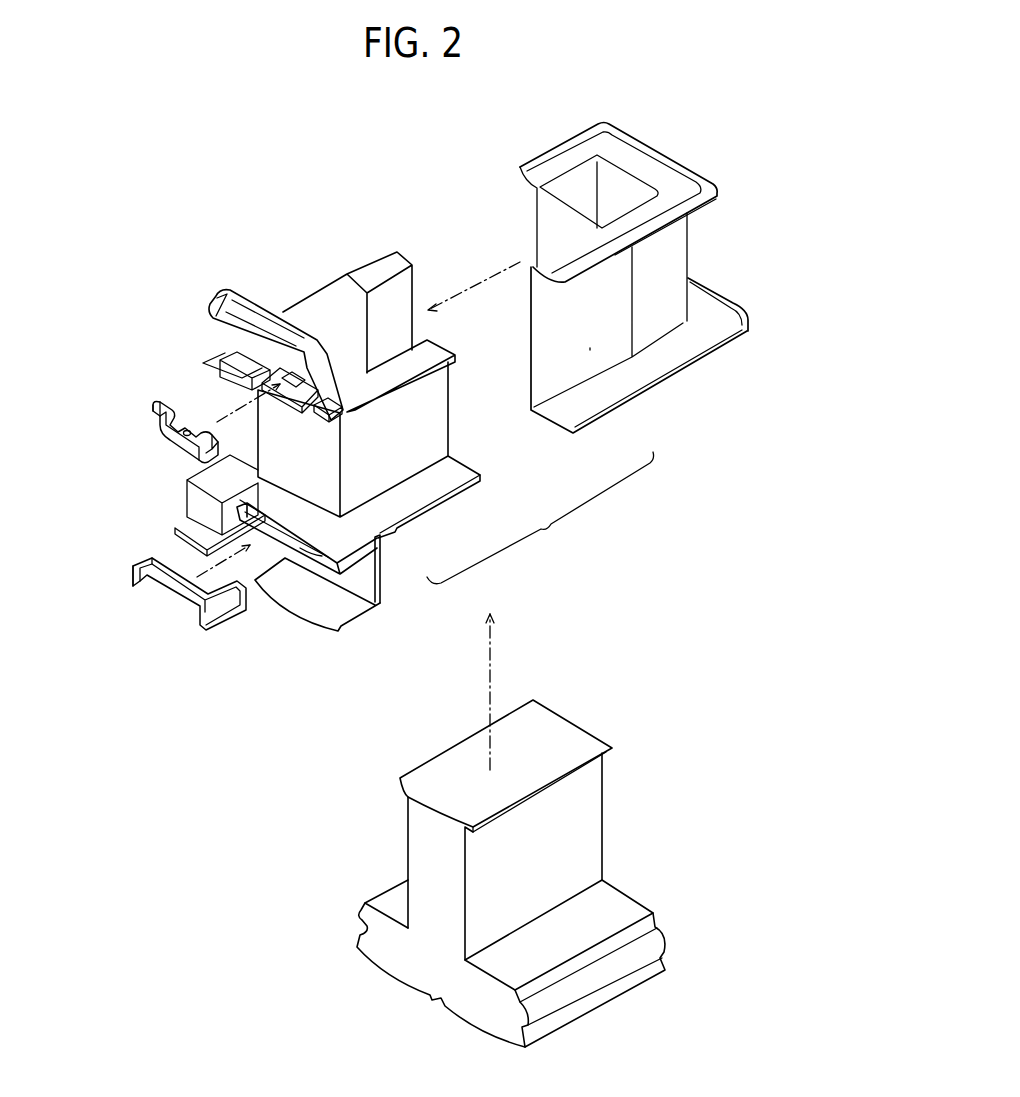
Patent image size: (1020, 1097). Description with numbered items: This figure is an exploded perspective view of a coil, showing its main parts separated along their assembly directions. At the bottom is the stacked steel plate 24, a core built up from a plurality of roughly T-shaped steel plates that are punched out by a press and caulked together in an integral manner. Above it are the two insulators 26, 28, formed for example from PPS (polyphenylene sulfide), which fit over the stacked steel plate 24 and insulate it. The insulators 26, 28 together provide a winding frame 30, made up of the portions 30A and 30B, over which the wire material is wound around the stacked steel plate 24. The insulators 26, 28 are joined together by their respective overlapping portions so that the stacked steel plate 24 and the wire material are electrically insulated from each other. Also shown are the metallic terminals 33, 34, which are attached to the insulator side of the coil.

The stacked steel plate 24 is at (594, 733).
The insulator 26 is at (304, 621).
The insulator 28 is at (682, 388).
The winding frame 30 is at (540, 518).
The winding frame 30A is at (398, 460).
The winding frame 30B is at (590, 347).
The metallic terminal 33 is at (173, 446).
The metallic terminal 34 is at (172, 604).